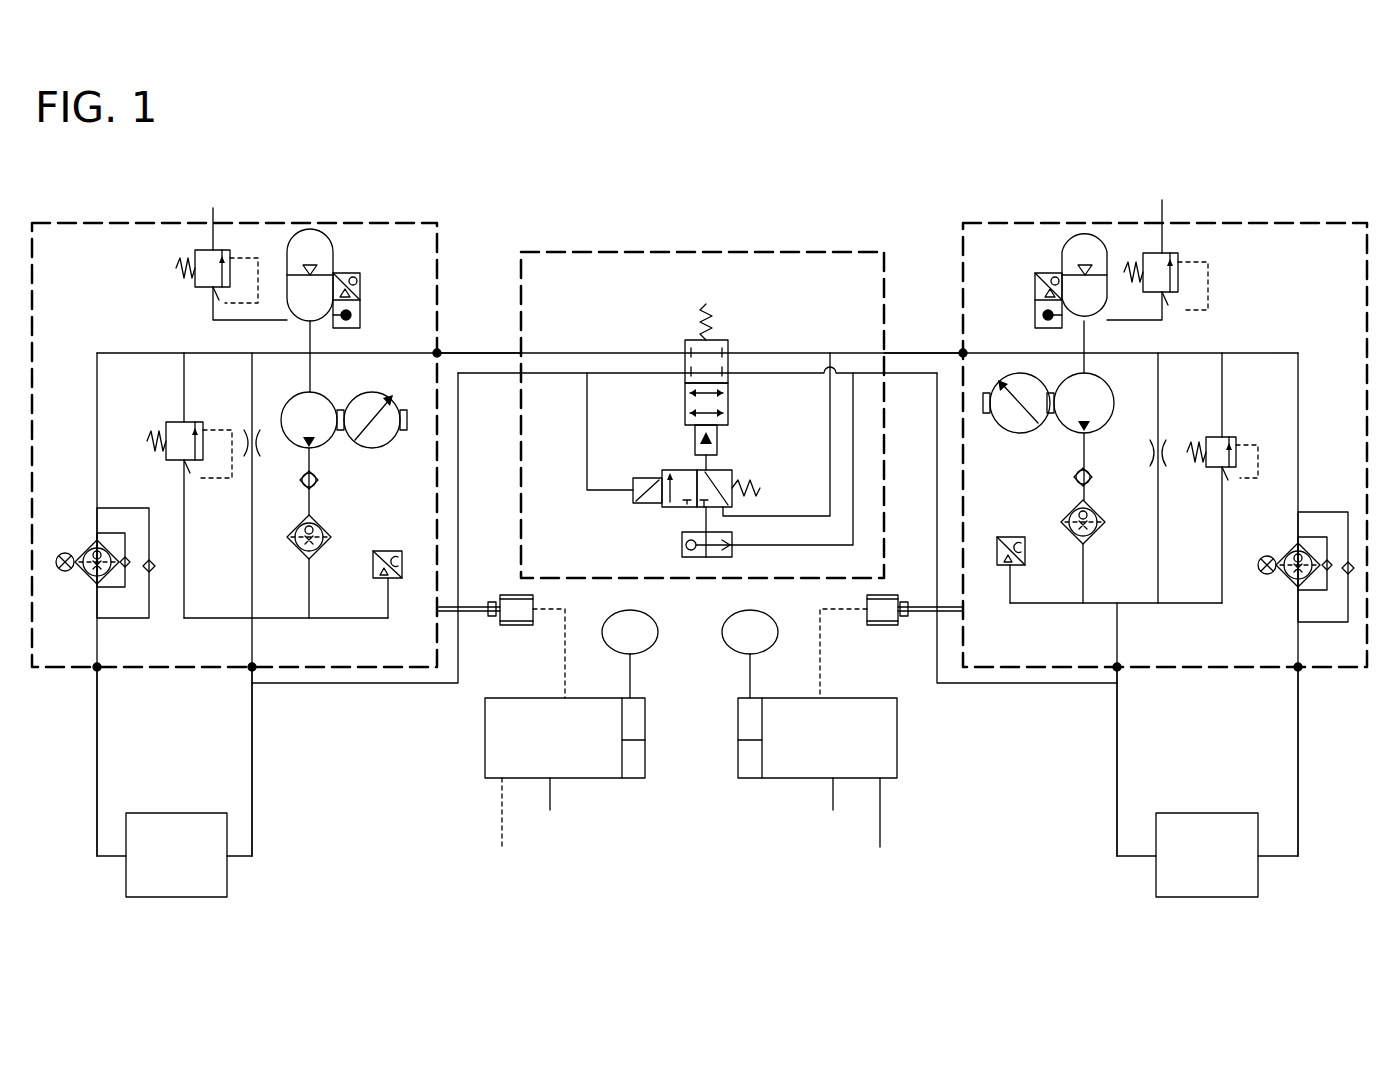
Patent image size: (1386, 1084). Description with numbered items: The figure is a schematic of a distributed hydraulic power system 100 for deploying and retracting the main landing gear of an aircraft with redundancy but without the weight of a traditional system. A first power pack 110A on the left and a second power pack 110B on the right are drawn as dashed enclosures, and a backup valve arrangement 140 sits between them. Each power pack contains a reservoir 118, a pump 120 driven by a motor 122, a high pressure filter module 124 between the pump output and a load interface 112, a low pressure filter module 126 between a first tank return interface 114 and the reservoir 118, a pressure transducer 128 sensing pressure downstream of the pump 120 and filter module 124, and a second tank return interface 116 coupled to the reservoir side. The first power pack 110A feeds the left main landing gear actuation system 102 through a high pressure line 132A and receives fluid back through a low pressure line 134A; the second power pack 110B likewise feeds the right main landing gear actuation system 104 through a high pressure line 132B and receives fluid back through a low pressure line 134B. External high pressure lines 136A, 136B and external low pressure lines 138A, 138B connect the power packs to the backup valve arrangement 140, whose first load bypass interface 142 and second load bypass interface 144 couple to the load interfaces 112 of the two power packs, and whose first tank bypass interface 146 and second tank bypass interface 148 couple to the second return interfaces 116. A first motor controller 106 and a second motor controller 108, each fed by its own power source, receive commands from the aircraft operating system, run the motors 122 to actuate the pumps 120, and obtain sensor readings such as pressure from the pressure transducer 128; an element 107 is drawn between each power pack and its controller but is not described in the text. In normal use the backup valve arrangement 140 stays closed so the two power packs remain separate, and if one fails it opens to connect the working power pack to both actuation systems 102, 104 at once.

The distributed hydraulic power system 100 is at (948, 150).
The left main landing gear actuation system 102 is at (145, 897).
The right main landing gear actuation system 104 is at (1230, 897).
The first motor controller 106 is at (485, 765).
The electric motor 107 is at (508, 625).
The second motor controller 108 is at (897, 760).
The first power pack 110A is at (365, 222).
The second power pack 110B is at (1250, 222).
The load interface 112 is at (252, 667).
The first tank return interface 114 is at (97, 667).
The second tank return interface 116 is at (437, 353).
The reservoir 118 is at (308, 230).
The pump 120 is at (322, 447).
The motor 122 is at (387, 447).
The high pressure filter module 124 is at (322, 552).
The low pressure filter module 126 is at (87, 547).
The pressure transducer 128 is at (395, 580).
The high pressure line 132A is at (253, 793).
The high pressure line 132B is at (1117, 775).
The low pressure line 134A is at (97, 768).
The low pressure line 134B is at (1298, 802).
The external high pressure line 136A is at (420, 683).
The external high pressure line 136B is at (983, 683).
The external low pressure line 138A is at (500, 352).
The external low pressure line 138B is at (940, 352).
The backup valve arrangement 140 is at (625, 252).
The first load bypass interface 142 is at (522, 373).
The second load bypass interface 144 is at (885, 373).
The first tank bypass interface 146 is at (522, 353).
The second tank bypass interface 148 is at (883, 352).